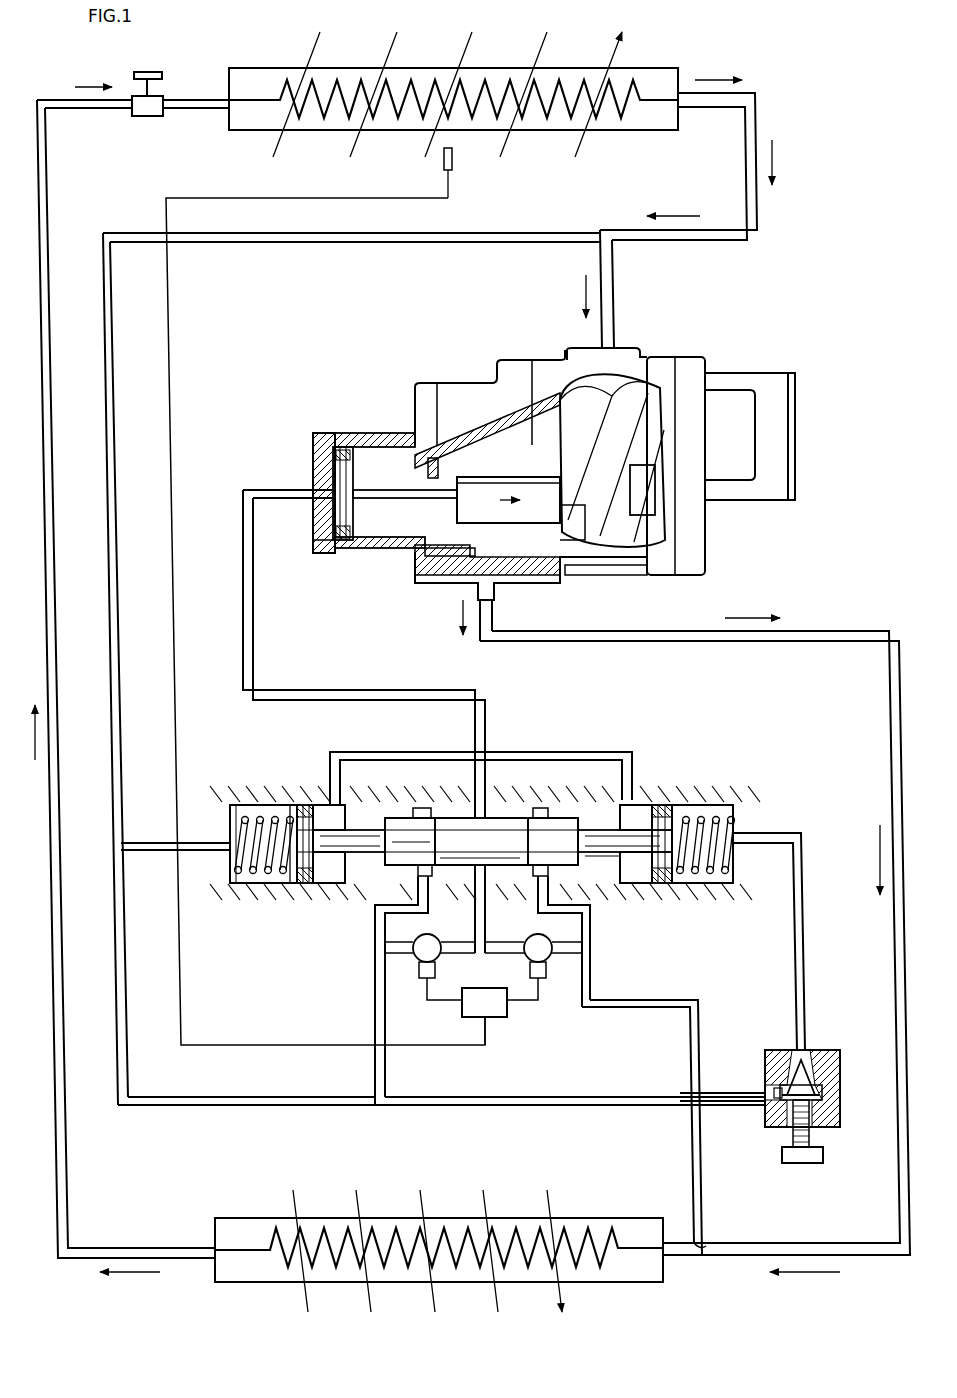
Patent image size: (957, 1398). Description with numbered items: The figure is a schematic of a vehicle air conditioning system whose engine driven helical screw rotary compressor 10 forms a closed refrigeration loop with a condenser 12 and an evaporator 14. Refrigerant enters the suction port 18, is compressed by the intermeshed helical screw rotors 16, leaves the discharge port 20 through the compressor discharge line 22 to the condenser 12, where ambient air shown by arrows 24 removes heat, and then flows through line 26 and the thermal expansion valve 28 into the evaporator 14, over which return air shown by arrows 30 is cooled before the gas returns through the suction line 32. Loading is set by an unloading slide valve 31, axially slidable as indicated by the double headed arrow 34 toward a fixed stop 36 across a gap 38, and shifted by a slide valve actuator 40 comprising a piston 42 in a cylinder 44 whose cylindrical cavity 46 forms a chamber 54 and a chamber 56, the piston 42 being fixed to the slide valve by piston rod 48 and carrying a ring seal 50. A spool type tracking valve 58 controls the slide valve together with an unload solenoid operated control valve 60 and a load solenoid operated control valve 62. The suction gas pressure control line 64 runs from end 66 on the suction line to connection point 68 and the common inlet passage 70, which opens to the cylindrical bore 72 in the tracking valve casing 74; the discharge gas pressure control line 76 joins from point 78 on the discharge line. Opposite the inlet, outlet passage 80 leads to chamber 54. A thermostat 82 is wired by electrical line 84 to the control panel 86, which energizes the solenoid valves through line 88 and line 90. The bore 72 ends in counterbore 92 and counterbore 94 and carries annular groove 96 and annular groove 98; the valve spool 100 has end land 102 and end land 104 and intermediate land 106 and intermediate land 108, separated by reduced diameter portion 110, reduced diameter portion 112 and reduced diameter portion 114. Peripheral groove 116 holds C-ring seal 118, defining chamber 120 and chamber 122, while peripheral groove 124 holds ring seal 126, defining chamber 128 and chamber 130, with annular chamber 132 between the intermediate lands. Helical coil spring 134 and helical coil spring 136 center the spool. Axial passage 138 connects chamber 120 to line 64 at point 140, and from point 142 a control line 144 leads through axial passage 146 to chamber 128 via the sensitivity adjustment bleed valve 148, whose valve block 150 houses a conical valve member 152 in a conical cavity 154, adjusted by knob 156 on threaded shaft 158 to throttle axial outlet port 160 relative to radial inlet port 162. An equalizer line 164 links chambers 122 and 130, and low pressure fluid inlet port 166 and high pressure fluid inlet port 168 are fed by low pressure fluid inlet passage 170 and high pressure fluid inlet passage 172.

The helical screw rotary compressor 10 is at (706, 318).
The condenser 12 is at (596, 1208).
The evaporator 14 is at (632, 60).
The helical screw rotors 16 is at (652, 428).
The suction port 18 is at (620, 347).
The discharge port 20 is at (496, 602).
The compressor discharge line 22 is at (620, 632).
The arrows 24 is at (546, 1202).
The line 26 is at (184, 1248).
The thermal expansion valve 28 is at (160, 96).
The arrows 30 is at (352, 146).
The unloading slide valve 31 is at (575, 545).
The suction line 32 is at (614, 300).
The slide valve 34 is at (500, 500).
The fixed stop 36 is at (650, 503).
The gap 38 is at (634, 482).
The slide valve actuator 40 is at (370, 415).
The piston 42 is at (356, 526).
The cylinder 44 is at (375, 550).
The cylindrical cavity 46 is at (403, 550).
The piston rod 48 is at (398, 498).
The ring seal 50 is at (352, 467).
The chamber 54 is at (318, 560).
The chamber 56 is at (440, 462).
The tracking valve 58 is at (670, 758).
The unload solenoid operated control valve 60 is at (437, 936).
The load solenoid operated control valve 62 is at (528, 938).
The suction gas pressure control line 64 is at (118, 682).
The end 66 is at (598, 232).
The connection point 68 is at (480, 956).
The common inlet passage 70 is at (488, 898).
The cylindrical bore 72 is at (485, 815).
The tracking valve casing 74 is at (676, 805).
The discharge gas pressure control line 76 is at (700, 1032).
The point 78 is at (704, 1248).
The outlet passage 80 is at (487, 750).
The thermostat 82 is at (454, 157).
The electrical line 84 is at (172, 360).
The control panel 86 is at (494, 1026).
The line 88 is at (424, 1000).
The line 90 is at (538, 1000).
The counterbore 92 is at (280, 890).
The counterbore 94 is at (680, 882).
The annular groove 96 is at (420, 812).
The annular groove 98 is at (535, 810).
The valve spool 100 is at (410, 820).
The end land 102 is at (300, 882).
The end land 104 is at (712, 883).
The intermediate land 106 is at (343, 882).
The intermediate land 108 is at (590, 870).
The reduced diameter valve spool portion 110 is at (360, 832).
The reduced diameter portion 112 is at (475, 868).
The reduced diameter portion 114 is at (600, 830).
The peripheral groove 116 is at (290, 820).
The C-ring seal 118 is at (306, 805).
The chamber 120 is at (243, 890).
The chamber 122 is at (297, 890).
The peripheral groove 124 is at (705, 805).
The ring seal 126 is at (662, 805).
The chamber 128 is at (728, 882).
The chamber 130 is at (640, 882).
The annular chamber 132 is at (470, 820).
The helical coil spring 134 is at (250, 856).
The helical coil spring 136 is at (737, 858).
The axial passage 138 is at (218, 840).
The point 140 is at (117, 841).
The point 142 is at (383, 1106).
The control line 144 is at (510, 1104).
The axial passage 146 is at (740, 832).
The sensitivity adjustment bleed valve 148 is at (820, 1024).
The valve block 150 is at (787, 1050).
The conical valve member 152 is at (840, 1079).
The conical cavity 154 is at (790, 1088).
The knob 156 is at (825, 1160).
The threaded shaft 158 is at (812, 1138).
The axial outlet port 160 is at (804, 1056).
The radial inlet port 162 is at (770, 1098).
The equalizer line 164 is at (384, 752).
The low pressure fluid inlet port 166 is at (430, 876).
The high pressure fluid inlet port 168 is at (545, 877).
The low pressure fluid inlet passage 170 is at (380, 930).
The high pressure fluid inlet passage 172 is at (588, 924).